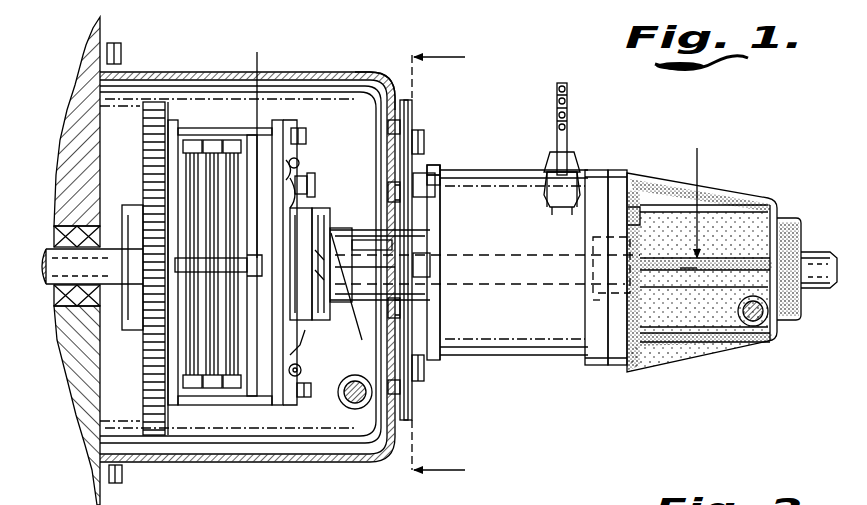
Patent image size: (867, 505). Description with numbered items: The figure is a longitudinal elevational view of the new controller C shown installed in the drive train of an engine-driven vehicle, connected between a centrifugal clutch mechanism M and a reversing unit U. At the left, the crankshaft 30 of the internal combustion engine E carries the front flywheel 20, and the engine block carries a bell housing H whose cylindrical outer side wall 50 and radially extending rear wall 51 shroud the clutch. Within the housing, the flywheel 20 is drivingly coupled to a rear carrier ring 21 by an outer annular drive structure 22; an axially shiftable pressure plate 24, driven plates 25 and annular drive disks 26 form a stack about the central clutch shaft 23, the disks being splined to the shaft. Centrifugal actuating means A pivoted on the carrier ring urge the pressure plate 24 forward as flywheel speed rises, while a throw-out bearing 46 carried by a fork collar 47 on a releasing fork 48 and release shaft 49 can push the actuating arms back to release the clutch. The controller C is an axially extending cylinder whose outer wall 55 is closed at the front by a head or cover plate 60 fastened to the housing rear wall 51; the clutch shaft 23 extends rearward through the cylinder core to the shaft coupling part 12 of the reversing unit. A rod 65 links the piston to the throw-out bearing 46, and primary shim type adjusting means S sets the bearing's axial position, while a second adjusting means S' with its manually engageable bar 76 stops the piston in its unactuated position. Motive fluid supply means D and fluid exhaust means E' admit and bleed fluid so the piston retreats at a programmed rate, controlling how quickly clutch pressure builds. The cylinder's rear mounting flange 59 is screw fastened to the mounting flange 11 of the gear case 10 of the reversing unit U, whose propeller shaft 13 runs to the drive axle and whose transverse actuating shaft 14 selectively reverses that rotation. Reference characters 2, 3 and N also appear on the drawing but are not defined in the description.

The internal combustion engine E is at (76, 261).
The bell housing H is at (170, 72).
The centrifugal clutch mechanism M is at (443, 268).
The motor shaft 2 is at (447, 154).
The outer annular drive structure 22 is at (268, 135).
The outer side wall 50 is at (340, 76).
The section line 3 is at (453, 266).
The manually engageable bar 76 is at (422, 104).
The second adjusting means S' is at (448, 260).
The head or cover plate 60 is at (440, 170).
The outer wall 55 is at (462, 172).
The controller C is at (487, 239).
The motive fluid supply means D is at (572, 89).
The fluid exhaust means E' is at (589, 166).
The reversing unit U is at (778, 214).
The crankshaft 30 is at (46, 249).
The centrifugal actuating means A is at (306, 162).
The contact N is at (320, 182).
The throw-out bearing 46 is at (310, 212).
The fork collar 47 is at (320, 228).
The primary shim type adjusting means S is at (399, 253).
The rod 65 is at (383, 247).
The clutch shaft 23 is at (545, 256).
The shaft coupling part 12 is at (593, 300).
The releasing fork 48 is at (360, 340).
The rear wall 51 is at (412, 412).
The front flywheel 20 is at (170, 418).
The driven plates 25 is at (197, 404).
The annular drive disks 26 is at (228, 404).
The pressure plate 24 is at (246, 404).
The carrier ring 21 is at (281, 408).
The release shaft 49 is at (355, 409).
The annular mounting flange 59 is at (592, 367).
The mounting flange 11 is at (620, 367).
The gear case 10 is at (702, 355).
The actuating shaft 14 is at (748, 332).
The propeller shaft 13 is at (826, 292).